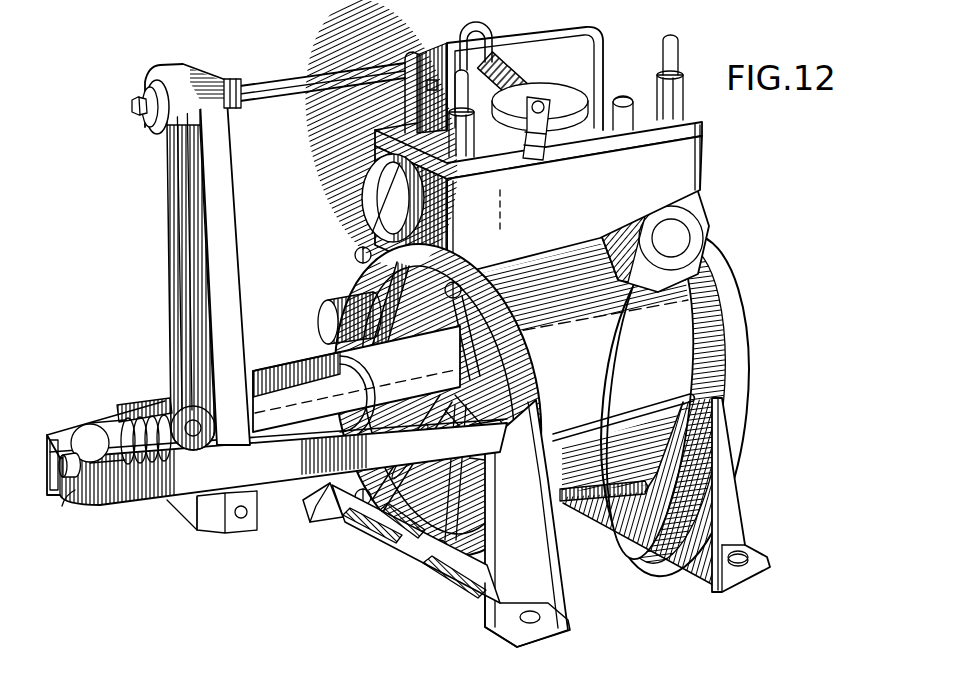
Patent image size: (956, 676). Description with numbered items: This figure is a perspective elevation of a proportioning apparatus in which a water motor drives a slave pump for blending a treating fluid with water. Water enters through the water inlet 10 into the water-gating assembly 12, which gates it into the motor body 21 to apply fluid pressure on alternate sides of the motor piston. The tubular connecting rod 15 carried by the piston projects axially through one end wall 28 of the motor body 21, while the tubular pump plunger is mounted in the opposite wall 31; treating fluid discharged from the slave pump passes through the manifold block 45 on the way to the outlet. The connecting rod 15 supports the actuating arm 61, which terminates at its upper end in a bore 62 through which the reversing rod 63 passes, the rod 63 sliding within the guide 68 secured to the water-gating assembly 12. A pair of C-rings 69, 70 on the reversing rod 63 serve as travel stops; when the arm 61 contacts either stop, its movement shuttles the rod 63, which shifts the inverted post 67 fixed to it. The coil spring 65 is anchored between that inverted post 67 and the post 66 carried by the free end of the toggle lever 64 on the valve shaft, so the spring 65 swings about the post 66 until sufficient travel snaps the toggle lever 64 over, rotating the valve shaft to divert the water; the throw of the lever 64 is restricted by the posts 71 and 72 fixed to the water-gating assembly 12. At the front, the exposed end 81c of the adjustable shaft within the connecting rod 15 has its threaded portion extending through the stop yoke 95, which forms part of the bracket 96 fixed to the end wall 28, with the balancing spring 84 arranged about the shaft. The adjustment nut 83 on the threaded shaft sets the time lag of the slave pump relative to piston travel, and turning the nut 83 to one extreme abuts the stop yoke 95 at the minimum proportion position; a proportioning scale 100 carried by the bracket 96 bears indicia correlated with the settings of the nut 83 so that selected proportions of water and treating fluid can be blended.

The water inlet 10 is at (517, 250).
The water-gating assembly 12 is at (702, 167).
The connecting rod 15 is at (277, 397).
The motor body 21 is at (605, 386).
The end wall 28 is at (417, 508).
The opposite wall 31 is at (733, 333).
The manifold block 45 is at (513, 197).
The actuating arm 61 is at (167, 248).
The bore 62 is at (163, 128).
The reversing rod 63 is at (292, 84).
The toggle lever 64 is at (540, 107).
The coil spring 65 is at (506, 82).
The post 66 is at (537, 153).
The inverted post 67 is at (487, 40).
The guide 68 is at (422, 54).
The C-ring 69 is at (138, 86).
The C-ring 70 is at (239, 79).
The post 71 is at (517, 140).
The post 72 is at (626, 97).
The exposed end of the shaft 81c is at (60, 483).
The adjustment nut 83 is at (103, 445).
The balancing spring 84 is at (170, 445).
The stop yoke 95 is at (90, 505).
The bracket 96 is at (288, 478).
The proportioning scale 100 is at (123, 410).